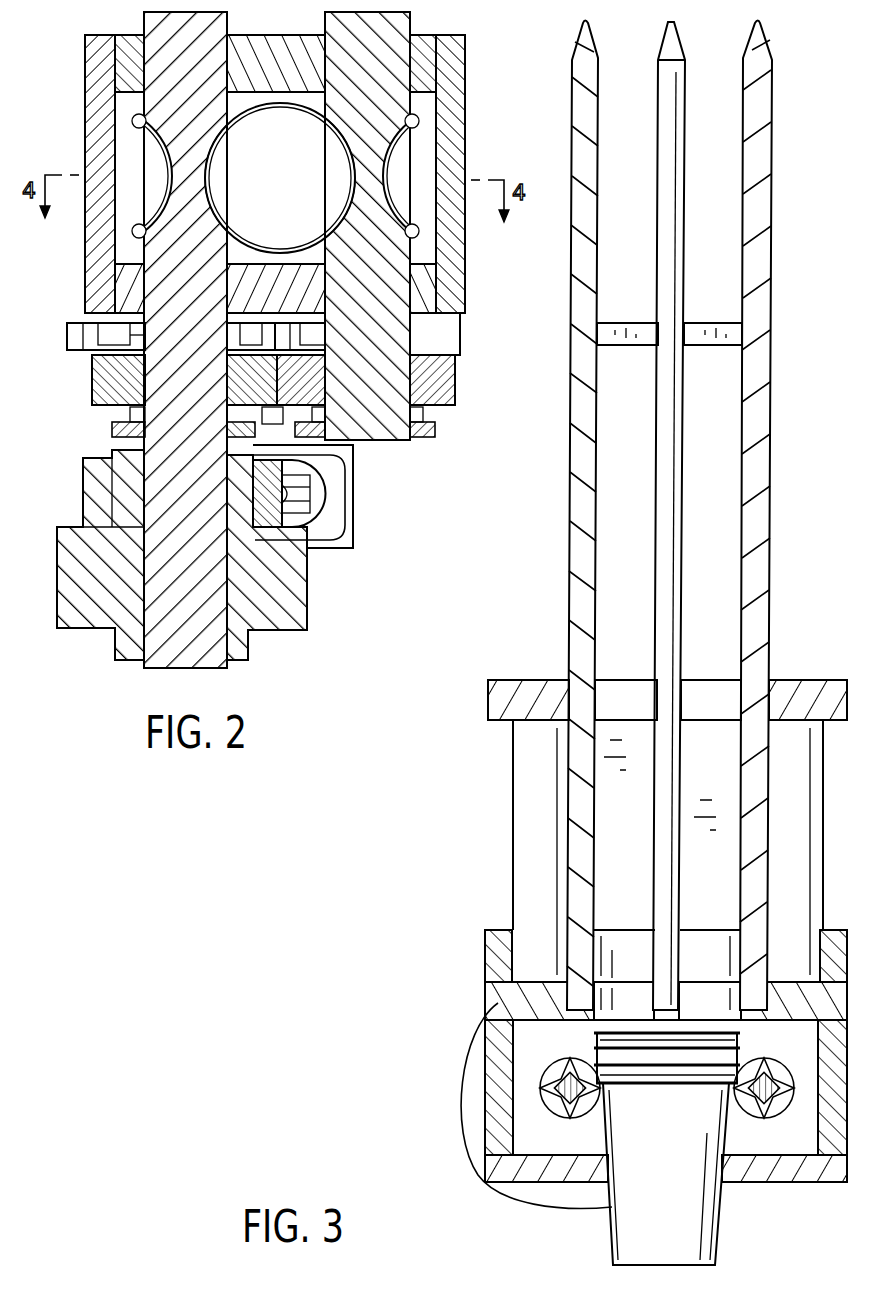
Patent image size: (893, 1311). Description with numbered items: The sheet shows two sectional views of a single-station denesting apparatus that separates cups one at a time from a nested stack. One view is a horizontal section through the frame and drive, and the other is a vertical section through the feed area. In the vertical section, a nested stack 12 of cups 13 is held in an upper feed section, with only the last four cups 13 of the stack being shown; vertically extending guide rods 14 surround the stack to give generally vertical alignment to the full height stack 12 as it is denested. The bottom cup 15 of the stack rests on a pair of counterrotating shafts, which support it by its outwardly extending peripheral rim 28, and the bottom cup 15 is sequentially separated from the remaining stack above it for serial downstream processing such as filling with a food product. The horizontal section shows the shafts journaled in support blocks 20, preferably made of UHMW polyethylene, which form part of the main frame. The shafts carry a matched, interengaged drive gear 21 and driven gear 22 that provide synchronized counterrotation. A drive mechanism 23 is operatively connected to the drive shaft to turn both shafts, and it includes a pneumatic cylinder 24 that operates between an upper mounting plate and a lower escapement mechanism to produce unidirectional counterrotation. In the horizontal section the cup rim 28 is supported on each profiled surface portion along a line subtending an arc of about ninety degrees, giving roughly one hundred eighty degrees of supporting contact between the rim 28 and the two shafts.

In FIG. 3, the nested stack 12 is at (695, 1162).
In FIG. 3, the cups 13 is at (722, 1068).
In FIG. 3, the guide rods 14 is at (680, 307).
In FIG. 3, the bottom cup 15 is at (688, 1240).
In FIG. 2, the support blocks 20 is at (420, 46).
In FIG. 2, the drive gear 21 is at (102, 378).
In FIG. 2, the driven gear 22 is at (456, 401).
In FIG. 2, the drive mechanism 23 is at (310, 588).
In FIG. 3, the drive mechanism 23 is at (466, 1080).
In FIG. 2, the pneumatic cylinder 24 is at (335, 494).
In FIG. 2, the peripheral rim 28 is at (348, 136).
In FIG. 3, the peripheral rim 28 is at (660, 1085).